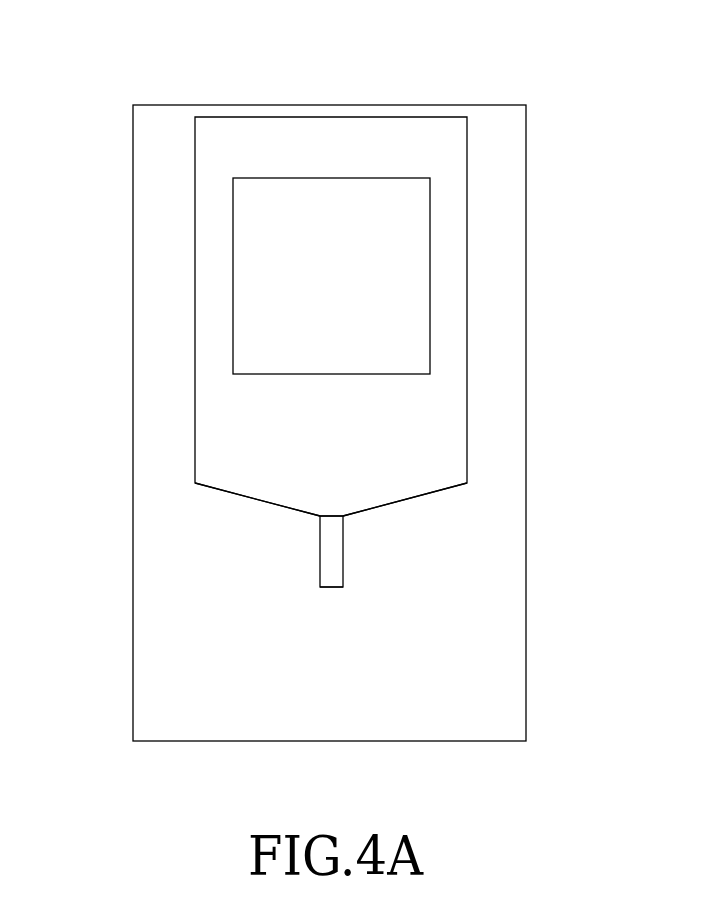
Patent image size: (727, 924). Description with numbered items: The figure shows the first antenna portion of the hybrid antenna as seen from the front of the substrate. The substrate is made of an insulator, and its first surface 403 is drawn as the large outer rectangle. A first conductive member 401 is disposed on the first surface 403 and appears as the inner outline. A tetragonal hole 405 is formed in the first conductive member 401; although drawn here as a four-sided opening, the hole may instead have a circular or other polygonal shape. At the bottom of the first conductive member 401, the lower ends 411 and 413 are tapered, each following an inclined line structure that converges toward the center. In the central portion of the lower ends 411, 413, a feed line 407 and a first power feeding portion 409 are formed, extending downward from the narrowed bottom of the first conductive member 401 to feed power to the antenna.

The first conductive member 401 is at (333, 130).
The first surface of the substrate 403 is at (507, 160).
The tetragonal hole 405 is at (400, 274).
The feed line 407 is at (328, 553).
The first power feeding portion 409 is at (330, 588).
The lower end of the first conductive member 411 is at (257, 500).
The lower end of the first conductive member 413 is at (403, 500).